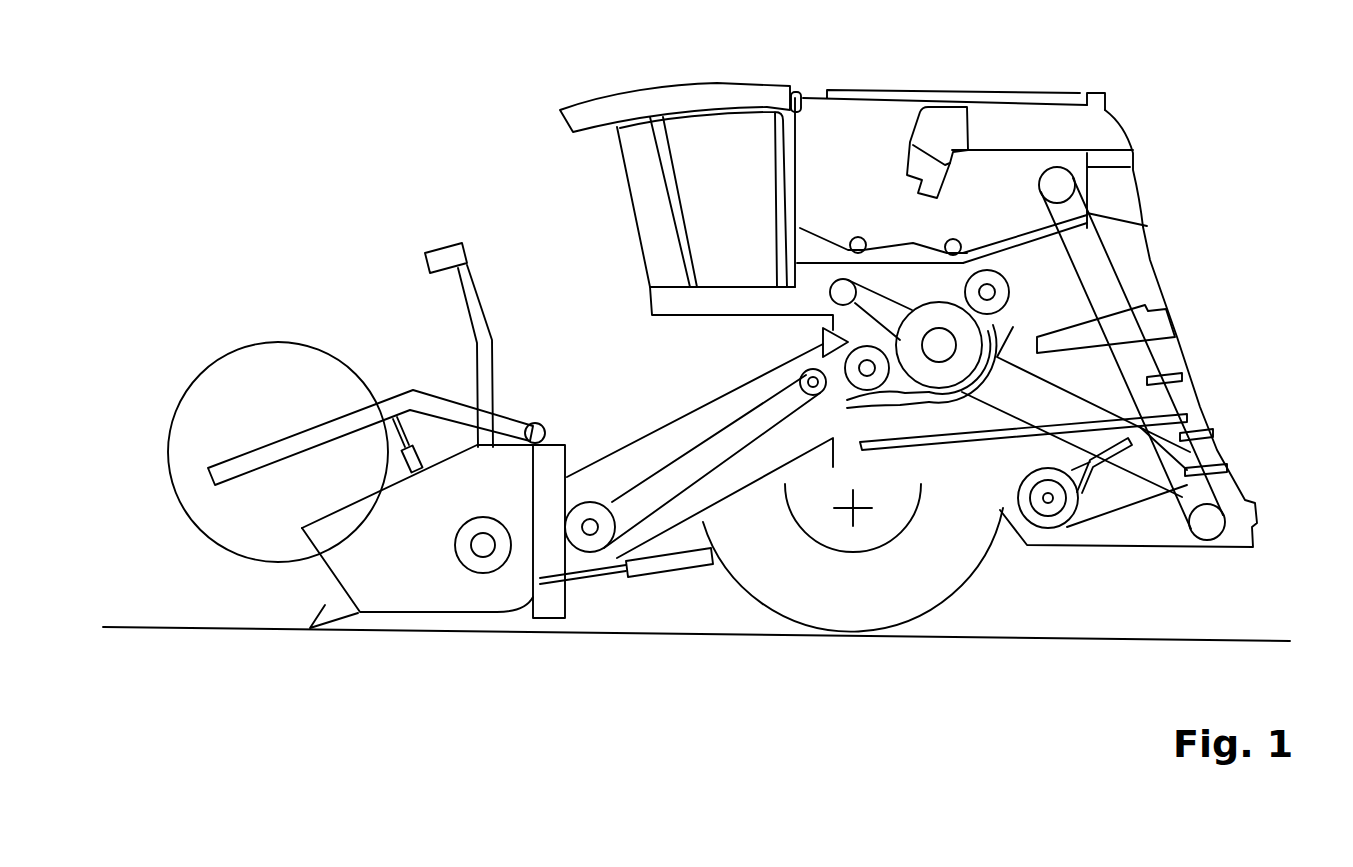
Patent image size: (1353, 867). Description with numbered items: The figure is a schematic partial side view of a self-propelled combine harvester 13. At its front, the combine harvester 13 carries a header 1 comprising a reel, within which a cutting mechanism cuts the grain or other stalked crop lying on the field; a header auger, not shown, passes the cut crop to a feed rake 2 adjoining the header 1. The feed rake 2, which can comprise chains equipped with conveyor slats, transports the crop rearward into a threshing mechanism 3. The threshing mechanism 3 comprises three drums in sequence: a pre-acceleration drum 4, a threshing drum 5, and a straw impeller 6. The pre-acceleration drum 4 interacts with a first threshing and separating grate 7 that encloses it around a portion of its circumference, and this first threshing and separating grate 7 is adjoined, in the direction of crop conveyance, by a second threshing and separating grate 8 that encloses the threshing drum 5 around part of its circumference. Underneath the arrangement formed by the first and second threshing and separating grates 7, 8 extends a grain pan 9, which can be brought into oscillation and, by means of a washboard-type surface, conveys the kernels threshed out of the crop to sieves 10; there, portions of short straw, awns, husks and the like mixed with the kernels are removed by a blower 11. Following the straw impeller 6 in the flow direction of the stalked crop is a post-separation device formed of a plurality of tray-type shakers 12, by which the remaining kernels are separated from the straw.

The header 1 is at (453, 583).
The feed rake 2 is at (637, 438).
The threshing mechanism 3 is at (818, 340).
The pre-acceleration drum 4 is at (866, 360).
The threshing drum 5 is at (939, 342).
The straw impeller 6 is at (1002, 279).
The first threshing and separating grate 7 is at (887, 397).
The second threshing and separating grate 8 is at (963, 403).
The grain pan 9 is at (1180, 378).
The sieves 10 is at (1247, 452).
The blower 11 is at (1048, 506).
The tray-type shakers 12 is at (1163, 327).
The combine harvester 13 is at (897, 72).